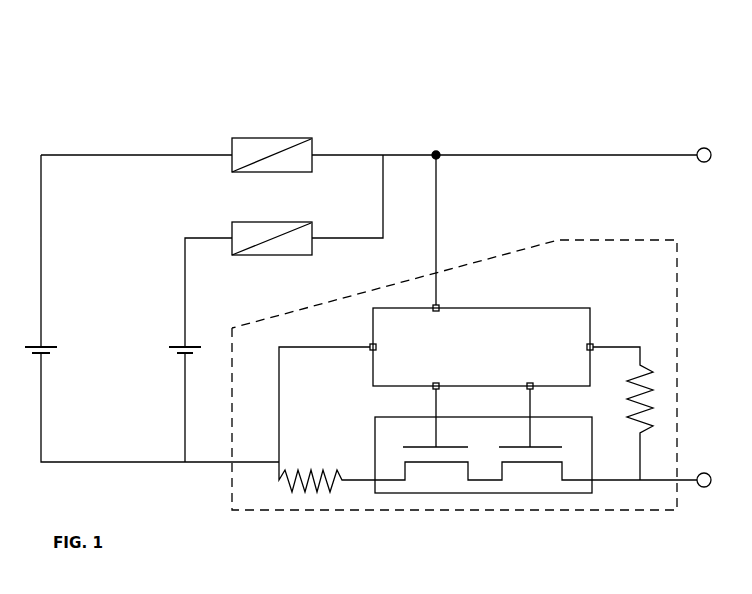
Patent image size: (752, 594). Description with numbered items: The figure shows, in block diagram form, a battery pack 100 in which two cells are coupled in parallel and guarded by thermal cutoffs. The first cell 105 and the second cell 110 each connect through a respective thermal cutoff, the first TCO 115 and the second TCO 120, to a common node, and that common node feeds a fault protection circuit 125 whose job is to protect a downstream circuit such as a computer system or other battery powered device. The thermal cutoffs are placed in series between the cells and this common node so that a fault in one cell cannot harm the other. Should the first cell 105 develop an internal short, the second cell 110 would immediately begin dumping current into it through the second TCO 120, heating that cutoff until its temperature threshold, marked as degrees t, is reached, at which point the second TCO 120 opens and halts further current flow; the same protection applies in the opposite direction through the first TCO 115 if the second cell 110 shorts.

The battery pack 100 is at (130, 68).
The cell-1 105 is at (57, 355).
The cell-2 110 is at (167, 330).
The TCO-1 115 is at (232, 138).
The TCO-2 120 is at (232, 222).
The fault protection circuit 125 is at (344, 510).